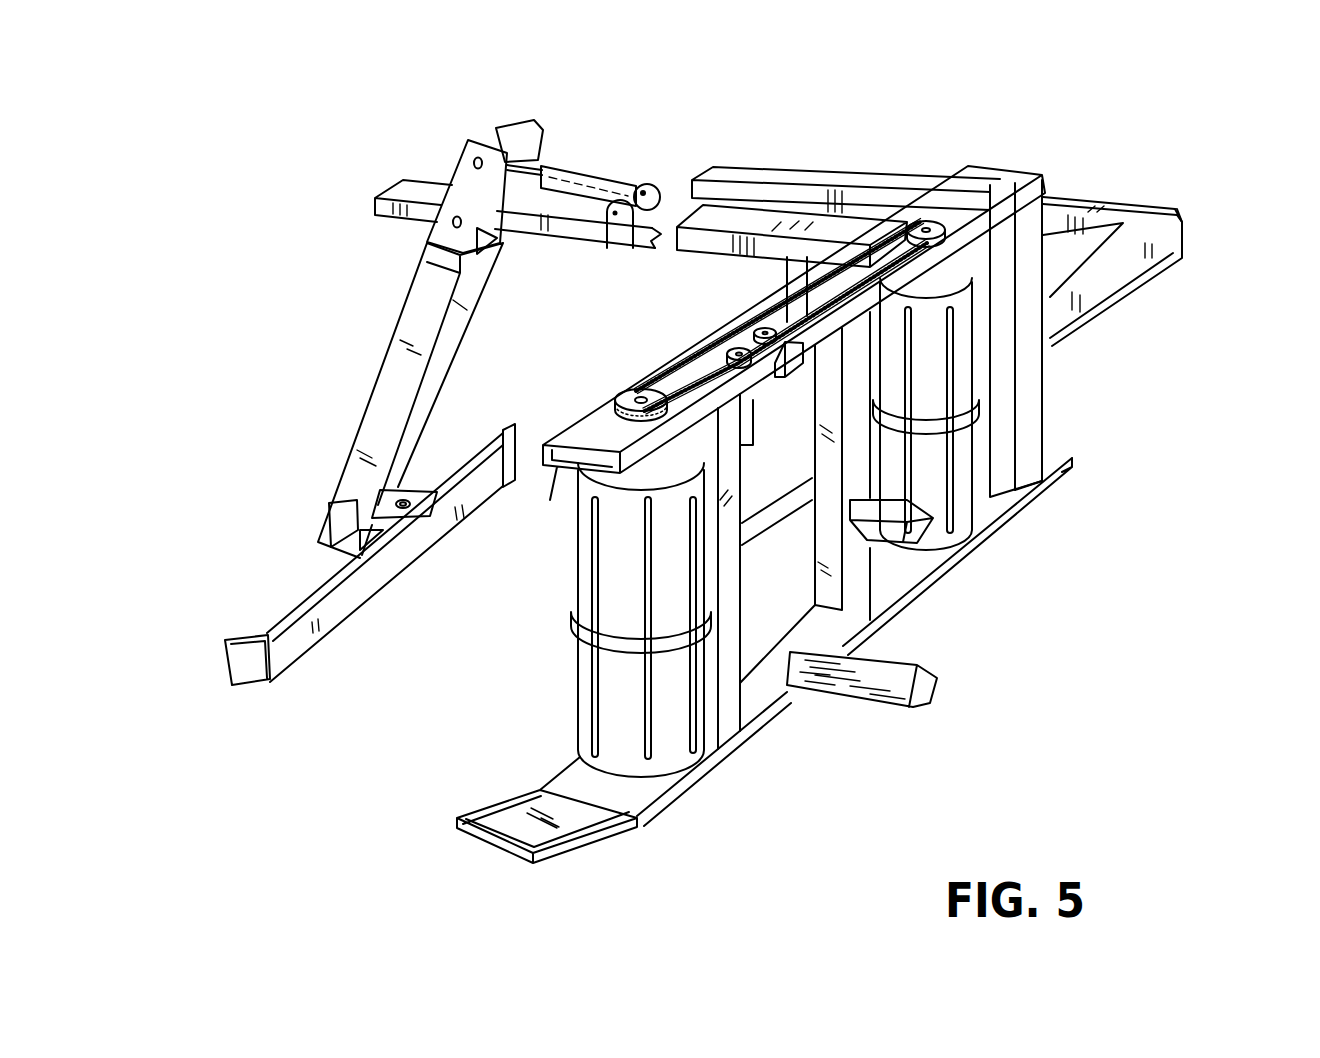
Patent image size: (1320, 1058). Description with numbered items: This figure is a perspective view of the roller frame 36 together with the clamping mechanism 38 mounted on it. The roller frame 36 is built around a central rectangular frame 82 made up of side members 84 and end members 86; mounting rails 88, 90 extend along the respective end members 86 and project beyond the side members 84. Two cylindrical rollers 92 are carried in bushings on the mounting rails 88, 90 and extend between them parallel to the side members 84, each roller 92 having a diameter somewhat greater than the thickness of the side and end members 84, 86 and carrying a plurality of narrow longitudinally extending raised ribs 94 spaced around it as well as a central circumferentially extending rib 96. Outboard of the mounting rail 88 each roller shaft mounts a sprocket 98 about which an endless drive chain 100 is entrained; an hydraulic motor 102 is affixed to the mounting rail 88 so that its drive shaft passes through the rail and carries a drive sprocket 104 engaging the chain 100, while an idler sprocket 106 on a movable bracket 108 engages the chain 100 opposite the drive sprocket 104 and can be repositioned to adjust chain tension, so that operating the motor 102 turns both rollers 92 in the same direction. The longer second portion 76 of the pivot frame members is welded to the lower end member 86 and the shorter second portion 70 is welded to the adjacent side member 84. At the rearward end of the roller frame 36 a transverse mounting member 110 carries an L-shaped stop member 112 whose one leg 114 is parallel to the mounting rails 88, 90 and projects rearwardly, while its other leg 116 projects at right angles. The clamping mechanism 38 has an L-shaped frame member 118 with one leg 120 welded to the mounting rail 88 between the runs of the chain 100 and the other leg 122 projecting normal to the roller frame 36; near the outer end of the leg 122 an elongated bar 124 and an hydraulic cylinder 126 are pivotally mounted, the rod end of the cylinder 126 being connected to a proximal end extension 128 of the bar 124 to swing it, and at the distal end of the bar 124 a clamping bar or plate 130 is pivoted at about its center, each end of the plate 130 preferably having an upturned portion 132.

The roller frame 36 is at (1070, 603).
The clamping mechanism 38 is at (603, 158).
The shorter second portion 70 is at (985, 530).
The longer second portion 76 is at (905, 703).
The central rectangular frame 82 is at (874, 619).
The side members 84 is at (990, 484).
The end members 86 is at (800, 765).
The mounting rail 88 is at (557, 470).
The mounting rail 90 is at (667, 808).
The rollers 92 is at (972, 447).
The raised ribs 94 is at (957, 368).
The central rib 96 is at (979, 395).
The sprocket 98 is at (933, 220).
The endless drive chain 100 is at (668, 382).
The hydraulic motor 102 is at (747, 452).
The drive sprocket 104 is at (728, 348).
The idler sprocket 106 is at (765, 326).
The movable bracket 108 is at (1020, 538).
The transverse mounting member 110 is at (1037, 447).
The L-shaped stop member 112 is at (1194, 232).
The leg 114 is at (1120, 281).
The leg 116 is at (855, 183).
The L-shaped frame member 118 is at (580, 251).
The leg 120 is at (787, 262).
The leg 122 is at (750, 220).
The elongated bar 124 is at (418, 320).
The hydraulic cylinder 126 is at (570, 172).
The proximal end extension 128 is at (460, 178).
The clamping bar or plate 130 is at (347, 603).
The upturned portion 132 is at (518, 422).